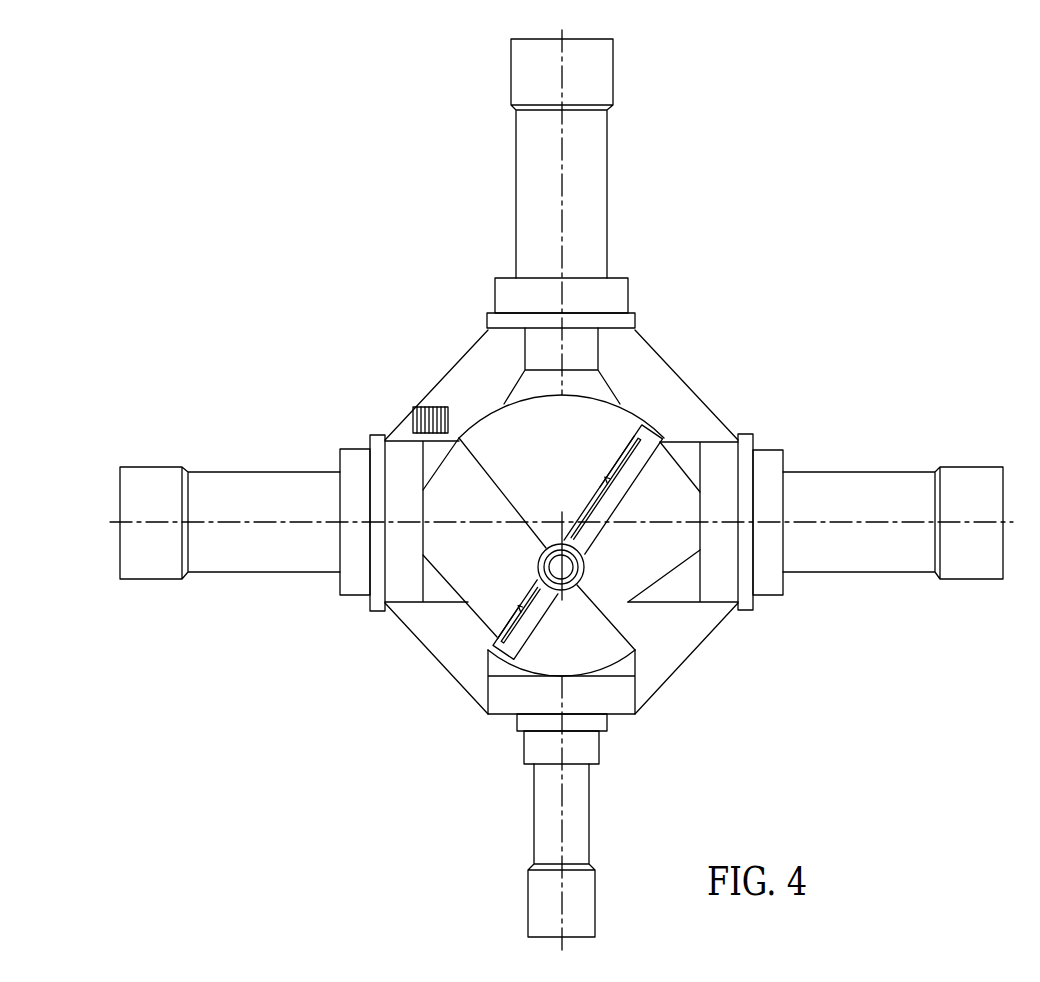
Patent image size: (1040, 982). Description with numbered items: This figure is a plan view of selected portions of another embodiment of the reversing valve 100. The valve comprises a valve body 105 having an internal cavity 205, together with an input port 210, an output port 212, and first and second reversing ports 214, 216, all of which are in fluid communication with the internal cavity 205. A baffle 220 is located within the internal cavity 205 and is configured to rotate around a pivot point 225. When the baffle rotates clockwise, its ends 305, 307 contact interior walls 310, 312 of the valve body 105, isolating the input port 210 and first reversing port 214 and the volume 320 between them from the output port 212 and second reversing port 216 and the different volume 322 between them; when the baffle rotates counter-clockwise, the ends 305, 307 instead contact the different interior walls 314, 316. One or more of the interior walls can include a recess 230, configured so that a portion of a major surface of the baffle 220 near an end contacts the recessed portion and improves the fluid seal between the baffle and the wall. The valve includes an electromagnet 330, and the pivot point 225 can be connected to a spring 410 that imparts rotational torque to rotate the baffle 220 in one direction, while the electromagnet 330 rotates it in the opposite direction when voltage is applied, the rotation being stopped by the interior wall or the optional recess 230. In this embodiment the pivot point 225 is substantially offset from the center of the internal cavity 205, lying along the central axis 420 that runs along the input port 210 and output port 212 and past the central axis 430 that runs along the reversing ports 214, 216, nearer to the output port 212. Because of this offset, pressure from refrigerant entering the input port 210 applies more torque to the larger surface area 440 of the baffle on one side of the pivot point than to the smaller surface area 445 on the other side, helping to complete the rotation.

The reversing valve 100 is at (320, 256).
The valve body 105 is at (655, 683).
The internal cavity 205 is at (554, 505).
The input port 210 is at (628, 322).
The output port 212 is at (517, 722).
The first reversing port 214 is at (377, 600).
The second reversing port 216 is at (752, 600).
The baffle 220 is at (590, 527).
The pivot point 225 is at (550, 570).
The recess 230 is at (460, 418).
The end of the baffle 305 is at (658, 426).
The end of the baffle 307 is at (488, 646).
The interior wall 310 is at (634, 419).
The interior wall 312 is at (512, 651).
The interior wall 314 is at (465, 439).
The interior wall 316 is at (618, 647).
The volume 320 is at (479, 505).
The different volume 322 is at (681, 505).
The electromagnet 330 is at (414, 419).
The spring 410 is at (585, 566).
The central axis 420 is at (563, 243).
The central axis 430 is at (268, 522).
The larger surface area 440 is at (603, 480).
The smaller surface area 445 is at (503, 607).